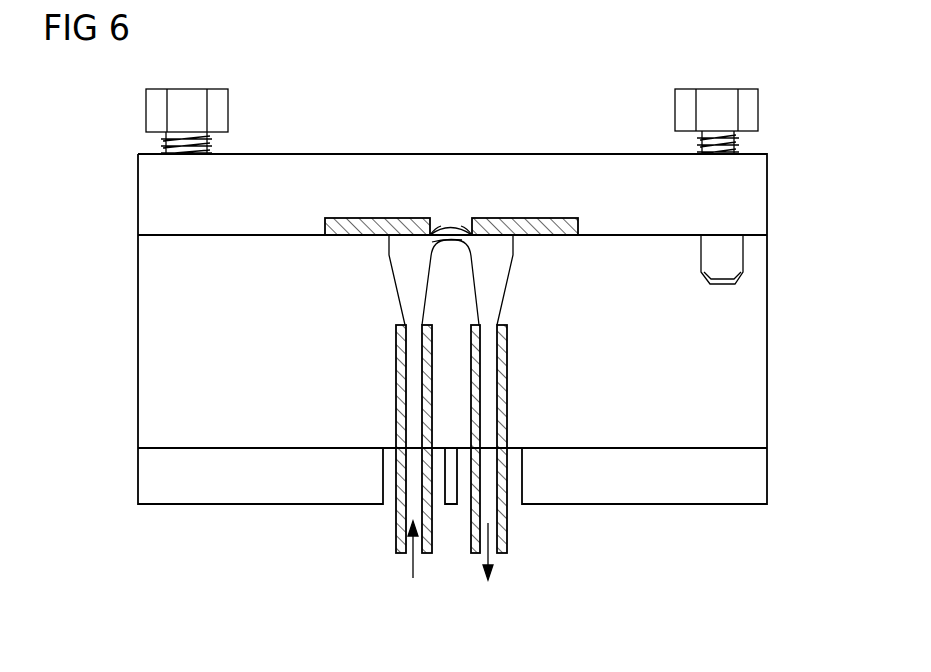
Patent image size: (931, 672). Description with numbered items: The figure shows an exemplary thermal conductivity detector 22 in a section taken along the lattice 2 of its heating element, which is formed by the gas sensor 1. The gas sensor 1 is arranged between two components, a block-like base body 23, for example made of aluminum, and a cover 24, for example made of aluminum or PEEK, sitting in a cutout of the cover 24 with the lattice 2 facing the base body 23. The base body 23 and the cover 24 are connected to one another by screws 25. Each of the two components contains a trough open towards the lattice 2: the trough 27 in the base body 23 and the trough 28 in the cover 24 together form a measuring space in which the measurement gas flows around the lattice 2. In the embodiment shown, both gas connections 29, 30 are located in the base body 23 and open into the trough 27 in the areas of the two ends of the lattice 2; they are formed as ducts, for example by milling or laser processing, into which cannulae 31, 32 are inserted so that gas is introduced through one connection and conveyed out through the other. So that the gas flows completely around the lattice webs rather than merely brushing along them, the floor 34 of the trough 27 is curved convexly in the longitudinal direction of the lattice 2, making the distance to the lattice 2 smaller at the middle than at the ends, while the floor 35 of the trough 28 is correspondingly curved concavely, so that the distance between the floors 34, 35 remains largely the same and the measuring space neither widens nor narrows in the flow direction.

The gas sensor 1 is at (344, 217).
The lattice 2 is at (448, 226).
The thermal conductivity detector 22 is at (596, 115).
The base body 23 is at (138, 333).
The cover 24 is at (388, 153).
The screws 25 is at (218, 110).
The trough 27 is at (432, 242).
The trough 28 is at (431, 226).
The gas connection 29 is at (408, 293).
The gas connection 30 is at (494, 294).
The cannula 31 is at (397, 524).
The cannula 32 is at (502, 524).
The floor 34 is at (456, 247).
The floor 35 is at (469, 226).